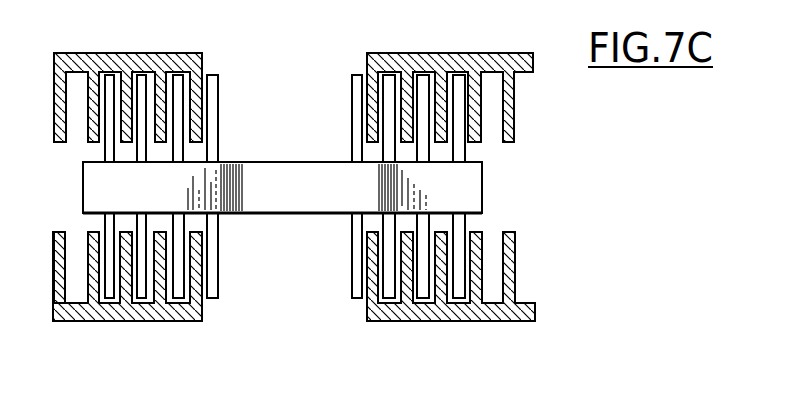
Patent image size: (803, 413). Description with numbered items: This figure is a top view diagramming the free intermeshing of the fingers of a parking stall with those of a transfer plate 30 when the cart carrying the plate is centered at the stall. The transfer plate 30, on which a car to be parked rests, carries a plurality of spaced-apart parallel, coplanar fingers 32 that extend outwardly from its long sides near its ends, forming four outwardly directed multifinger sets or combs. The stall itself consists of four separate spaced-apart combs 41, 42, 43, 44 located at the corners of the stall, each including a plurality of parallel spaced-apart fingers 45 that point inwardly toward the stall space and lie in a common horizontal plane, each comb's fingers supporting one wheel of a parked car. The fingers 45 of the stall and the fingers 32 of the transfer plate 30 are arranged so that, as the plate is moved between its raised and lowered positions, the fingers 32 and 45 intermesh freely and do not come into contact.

The transfer plate 30 is at (305, 199).
The fingers 32 is at (140, 78).
The comb 41 is at (168, 311).
The comb 42 is at (458, 322).
The comb 43 is at (202, 53).
The comb 44 is at (367, 53).
The fingers 45 is at (61, 231).